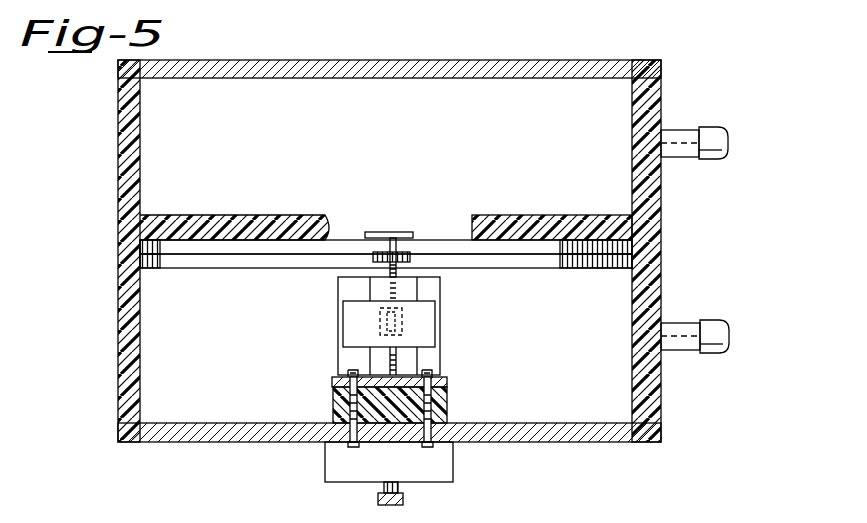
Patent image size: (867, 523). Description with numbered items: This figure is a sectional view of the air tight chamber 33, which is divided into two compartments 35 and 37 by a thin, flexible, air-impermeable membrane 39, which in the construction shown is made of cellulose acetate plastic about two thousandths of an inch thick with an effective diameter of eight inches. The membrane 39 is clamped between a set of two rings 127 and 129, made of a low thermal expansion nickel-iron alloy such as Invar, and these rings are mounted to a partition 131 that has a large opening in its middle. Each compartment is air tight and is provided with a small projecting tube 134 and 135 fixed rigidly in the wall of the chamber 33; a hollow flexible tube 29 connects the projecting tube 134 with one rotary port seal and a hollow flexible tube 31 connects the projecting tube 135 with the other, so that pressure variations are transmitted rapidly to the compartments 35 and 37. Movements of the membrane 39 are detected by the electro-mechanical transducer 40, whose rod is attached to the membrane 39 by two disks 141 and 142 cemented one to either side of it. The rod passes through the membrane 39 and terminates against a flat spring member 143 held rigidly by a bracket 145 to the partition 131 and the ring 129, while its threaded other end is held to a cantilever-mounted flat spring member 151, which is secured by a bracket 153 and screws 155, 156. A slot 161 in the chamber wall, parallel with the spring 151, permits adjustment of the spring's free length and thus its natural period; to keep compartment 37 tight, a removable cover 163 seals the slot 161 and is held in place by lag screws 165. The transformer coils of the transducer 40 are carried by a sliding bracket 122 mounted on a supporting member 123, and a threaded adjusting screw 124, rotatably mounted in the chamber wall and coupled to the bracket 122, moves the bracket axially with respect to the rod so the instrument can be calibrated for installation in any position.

The air tight chamber 33 is at (507, 59).
The compartment 35 is at (390, 157).
The compartment 37 is at (579, 363).
The hollow flexible tube 29 is at (718, 139).
The hollow flexible tube 31 is at (726, 332).
The projecting tube 134 is at (672, 135).
The projecting tube 135 is at (670, 330).
The partition 131 is at (580, 228).
The ring 129 is at (240, 250).
The ring 127 is at (292, 263).
The membrane 39 is at (497, 258).
The flat spring member 143 is at (390, 232).
The bracket 145 is at (410, 238).
The disk 141 is at (373, 256).
The disk 142 is at (375, 262).
The sliding bracket 122 is at (345, 316).
The supporting member 123 is at (347, 352).
The electro-mechanical transducer 40 is at (404, 328).
The screw 155 is at (435, 375).
The bracket 153 is at (335, 393).
The flat spring member 151 is at (447, 406).
The screw 156 is at (350, 445).
The slot 161 is at (390, 440).
The removable cover 163 is at (440, 471).
The lag screw 165 is at (383, 486).
The threaded adjusting screw 124 is at (386, 504).